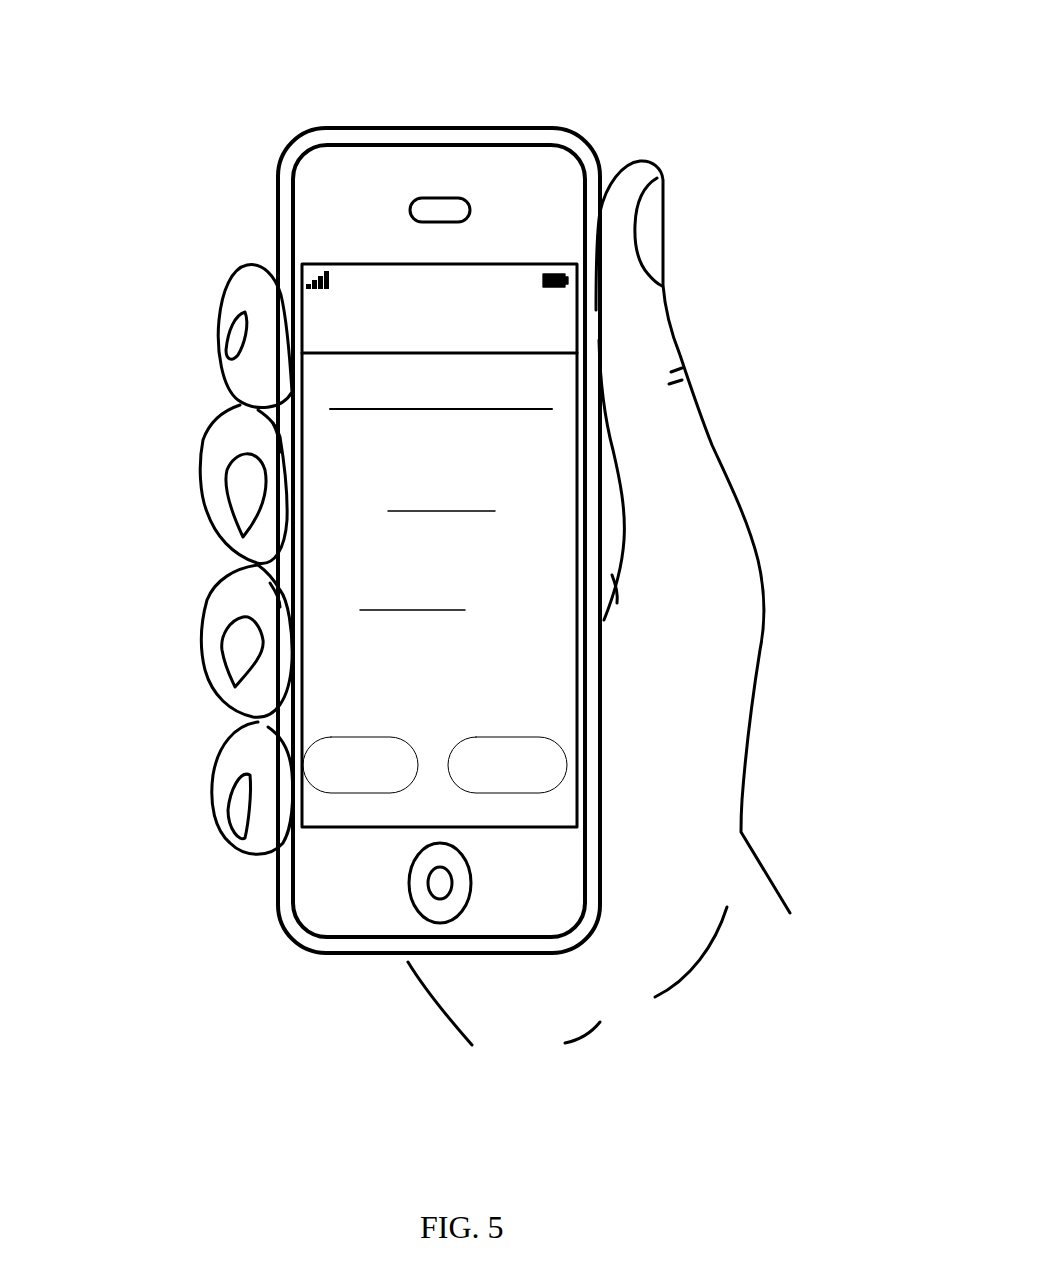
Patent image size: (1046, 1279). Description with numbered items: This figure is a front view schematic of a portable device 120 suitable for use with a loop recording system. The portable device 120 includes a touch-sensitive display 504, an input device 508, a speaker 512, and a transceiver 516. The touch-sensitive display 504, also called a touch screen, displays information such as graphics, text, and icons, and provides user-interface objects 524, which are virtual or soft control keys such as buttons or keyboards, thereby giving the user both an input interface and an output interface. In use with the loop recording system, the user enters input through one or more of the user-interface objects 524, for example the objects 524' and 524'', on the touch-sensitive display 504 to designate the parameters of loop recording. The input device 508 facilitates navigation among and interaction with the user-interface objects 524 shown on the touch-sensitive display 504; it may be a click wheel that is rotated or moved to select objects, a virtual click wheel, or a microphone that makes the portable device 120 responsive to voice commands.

The portable device 120 is at (462, 126).
The touch-sensitive display 504 is at (577, 702).
The input device 508 is at (453, 884).
The speaker 512 is at (412, 198).
The transceiver 516 is at (300, 272).
The user-interface objects 524 is at (605, 438).
The user-interface object 524' is at (615, 533).
The user-interface object 524'' is at (281, 726).